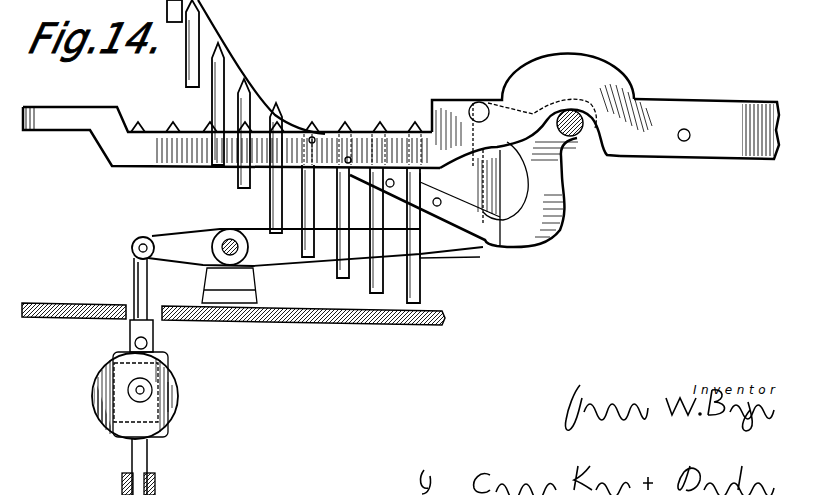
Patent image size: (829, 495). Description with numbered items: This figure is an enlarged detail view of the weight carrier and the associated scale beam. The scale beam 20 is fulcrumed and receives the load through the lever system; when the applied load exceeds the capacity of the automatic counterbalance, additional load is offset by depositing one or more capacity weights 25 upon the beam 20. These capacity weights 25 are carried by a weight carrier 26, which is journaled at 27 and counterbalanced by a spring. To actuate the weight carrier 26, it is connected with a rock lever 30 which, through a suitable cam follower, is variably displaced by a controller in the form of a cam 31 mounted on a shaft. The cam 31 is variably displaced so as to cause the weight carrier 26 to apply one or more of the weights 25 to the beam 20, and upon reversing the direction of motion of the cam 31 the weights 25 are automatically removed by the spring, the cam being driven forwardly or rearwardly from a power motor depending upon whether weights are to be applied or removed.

The beam 20 is at (685, 108).
The capacity weights 25 is at (187, 37).
The weight carrier 26 is at (545, 242).
The journal 27 is at (580, 130).
The rock lever 30 is at (450, 247).
The cam 31 is at (177, 380).